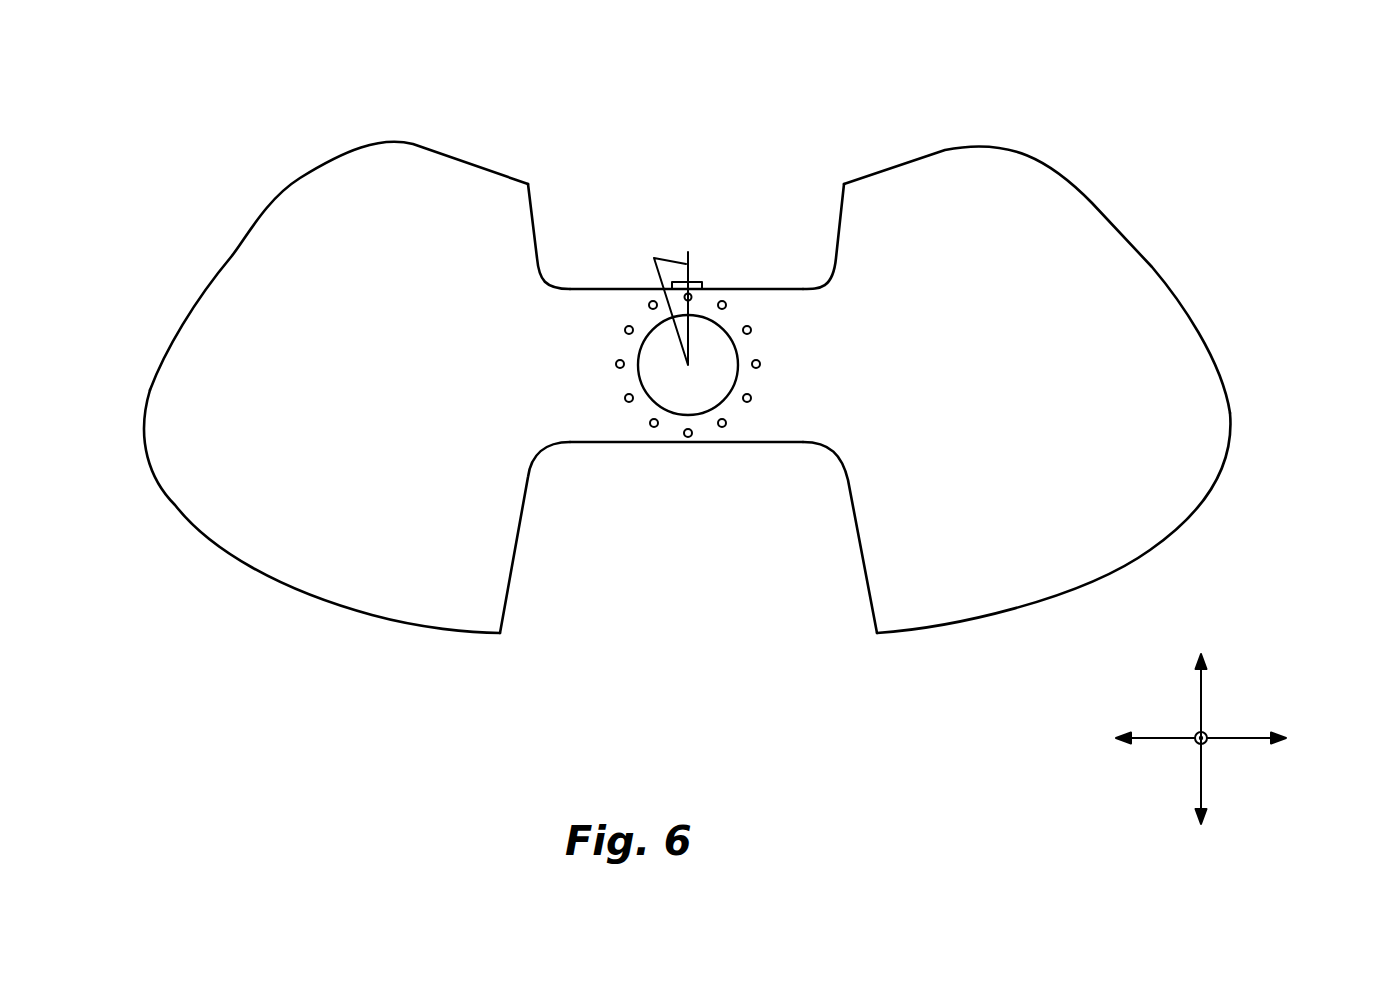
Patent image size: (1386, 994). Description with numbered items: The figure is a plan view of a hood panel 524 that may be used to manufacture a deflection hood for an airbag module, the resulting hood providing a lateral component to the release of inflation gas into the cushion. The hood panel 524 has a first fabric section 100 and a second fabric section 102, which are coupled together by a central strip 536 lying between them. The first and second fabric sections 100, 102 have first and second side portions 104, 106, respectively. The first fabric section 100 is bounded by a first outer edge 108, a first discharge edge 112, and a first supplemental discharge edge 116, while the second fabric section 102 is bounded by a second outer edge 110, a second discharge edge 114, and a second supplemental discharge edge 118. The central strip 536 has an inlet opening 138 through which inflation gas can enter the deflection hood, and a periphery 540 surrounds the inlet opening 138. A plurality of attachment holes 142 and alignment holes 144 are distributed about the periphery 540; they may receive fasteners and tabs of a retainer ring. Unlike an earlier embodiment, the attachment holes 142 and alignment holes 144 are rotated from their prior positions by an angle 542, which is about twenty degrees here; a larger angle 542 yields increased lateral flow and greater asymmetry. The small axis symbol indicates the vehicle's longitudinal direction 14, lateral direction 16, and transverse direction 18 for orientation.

The first fabric section 100 is at (666, 323).
The second fabric section 102 is at (701, 323).
The first side portion 104 is at (336, 387).
The second side portion 106 is at (1053, 490).
The first outer edge 108 is at (233, 257).
The second outer edge 110 is at (1092, 202).
The first discharge edge 112 is at (517, 548).
The second discharge edge 114 is at (858, 552).
The first supplemental discharge edge 116 is at (533, 208).
The second supplemental discharge edge 118 is at (840, 210).
The inlet opening 138 is at (738, 344).
The attachment holes 142 is at (723, 301).
The alignment holes 144 is at (651, 301).
The hood panel 524 is at (757, 151).
The central strip 536 is at (745, 450).
The periphery 540 is at (695, 339).
The angle 542 is at (664, 258).
The longitudinal direction 14 is at (1203, 706).
The lateral direction 16 is at (1237, 738).
The transverse direction 18 is at (1200, 742).